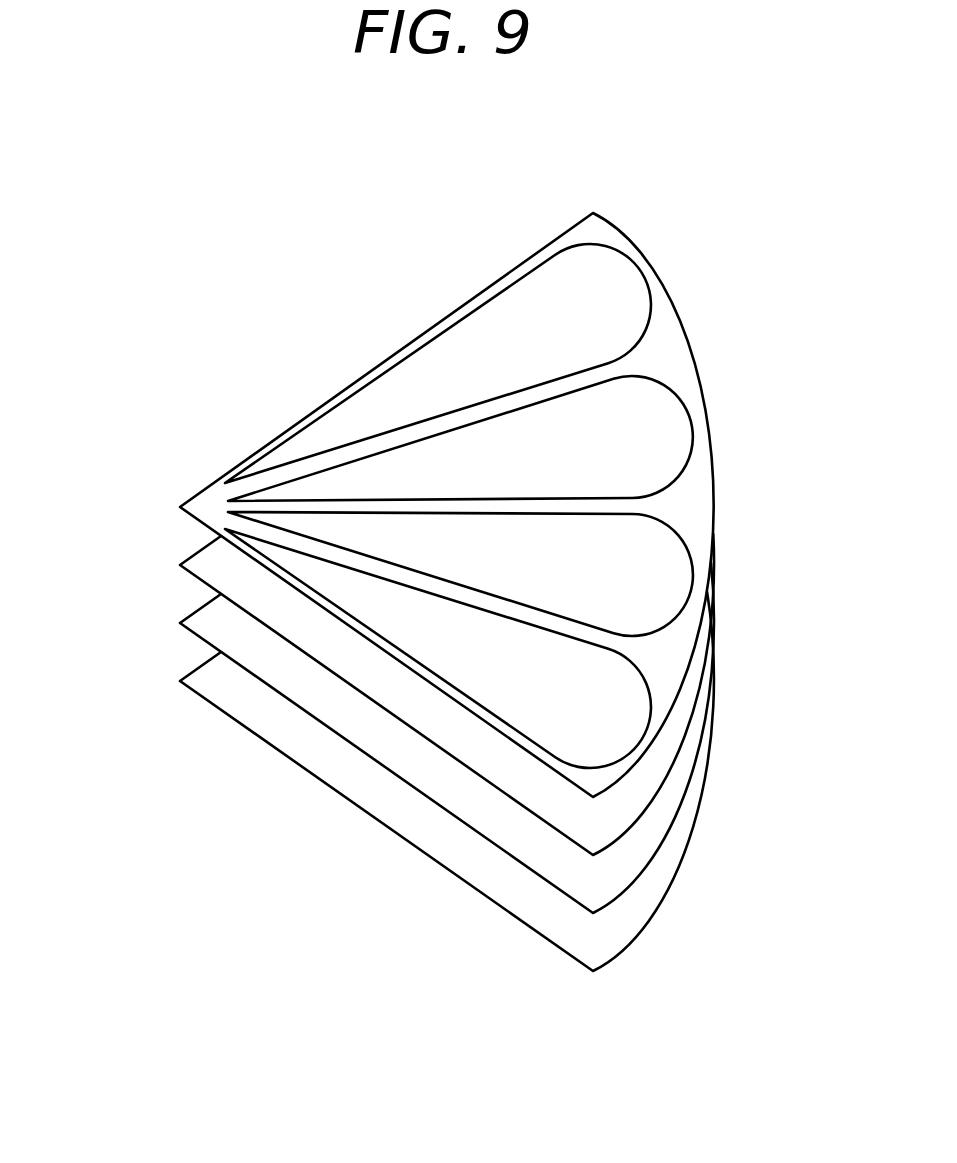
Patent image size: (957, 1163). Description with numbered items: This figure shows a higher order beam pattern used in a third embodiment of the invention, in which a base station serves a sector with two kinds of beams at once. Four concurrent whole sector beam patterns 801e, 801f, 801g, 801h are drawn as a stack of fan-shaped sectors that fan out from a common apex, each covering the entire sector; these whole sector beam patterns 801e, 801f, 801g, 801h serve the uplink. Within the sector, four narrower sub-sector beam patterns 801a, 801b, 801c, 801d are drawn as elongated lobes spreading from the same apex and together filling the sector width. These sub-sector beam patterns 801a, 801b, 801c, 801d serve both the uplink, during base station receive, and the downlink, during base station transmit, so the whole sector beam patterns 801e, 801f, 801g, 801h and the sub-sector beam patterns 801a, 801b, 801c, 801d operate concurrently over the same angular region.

The sub-sector beam pattern 801a is at (647, 280).
The sub-sector beam pattern 801b is at (655, 382).
The sub-sector beam pattern 801c is at (683, 542).
The sub-sector beam pattern 801d is at (645, 683).
The whole sector beam pattern 801e is at (388, 357).
The whole sector beam pattern 801f is at (195, 552).
The whole sector beam pattern 801g is at (190, 632).
The whole sector beam pattern 801h is at (210, 703).